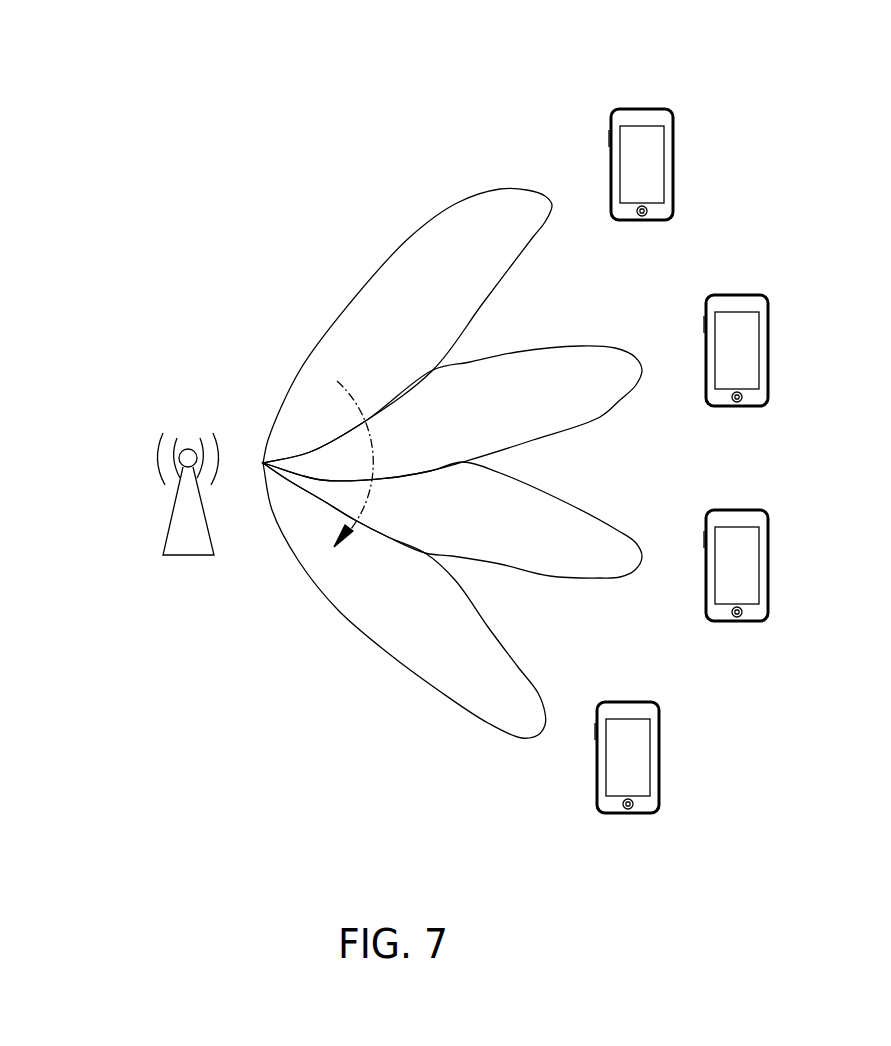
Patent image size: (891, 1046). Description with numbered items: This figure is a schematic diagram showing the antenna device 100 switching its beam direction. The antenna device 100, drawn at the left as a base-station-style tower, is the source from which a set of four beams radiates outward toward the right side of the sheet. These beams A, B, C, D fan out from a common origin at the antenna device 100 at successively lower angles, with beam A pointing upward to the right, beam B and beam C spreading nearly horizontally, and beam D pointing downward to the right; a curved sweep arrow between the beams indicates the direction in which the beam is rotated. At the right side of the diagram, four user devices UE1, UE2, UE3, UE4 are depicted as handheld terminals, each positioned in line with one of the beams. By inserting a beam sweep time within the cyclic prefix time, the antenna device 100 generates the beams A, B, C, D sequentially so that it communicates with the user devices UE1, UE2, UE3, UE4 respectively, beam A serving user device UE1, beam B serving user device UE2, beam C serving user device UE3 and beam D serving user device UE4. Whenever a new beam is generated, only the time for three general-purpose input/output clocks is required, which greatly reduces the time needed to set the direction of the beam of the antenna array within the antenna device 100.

The antenna device 100 is at (213, 438).
The beam A is at (428, 318).
The beam B is at (483, 420).
The beam C is at (502, 532).
The beam D is at (452, 647).
The user device UE1 is at (655, 109).
The user device UE2 is at (751, 295).
The user device UE3 is at (751, 510).
The user device UE4 is at (642, 702).